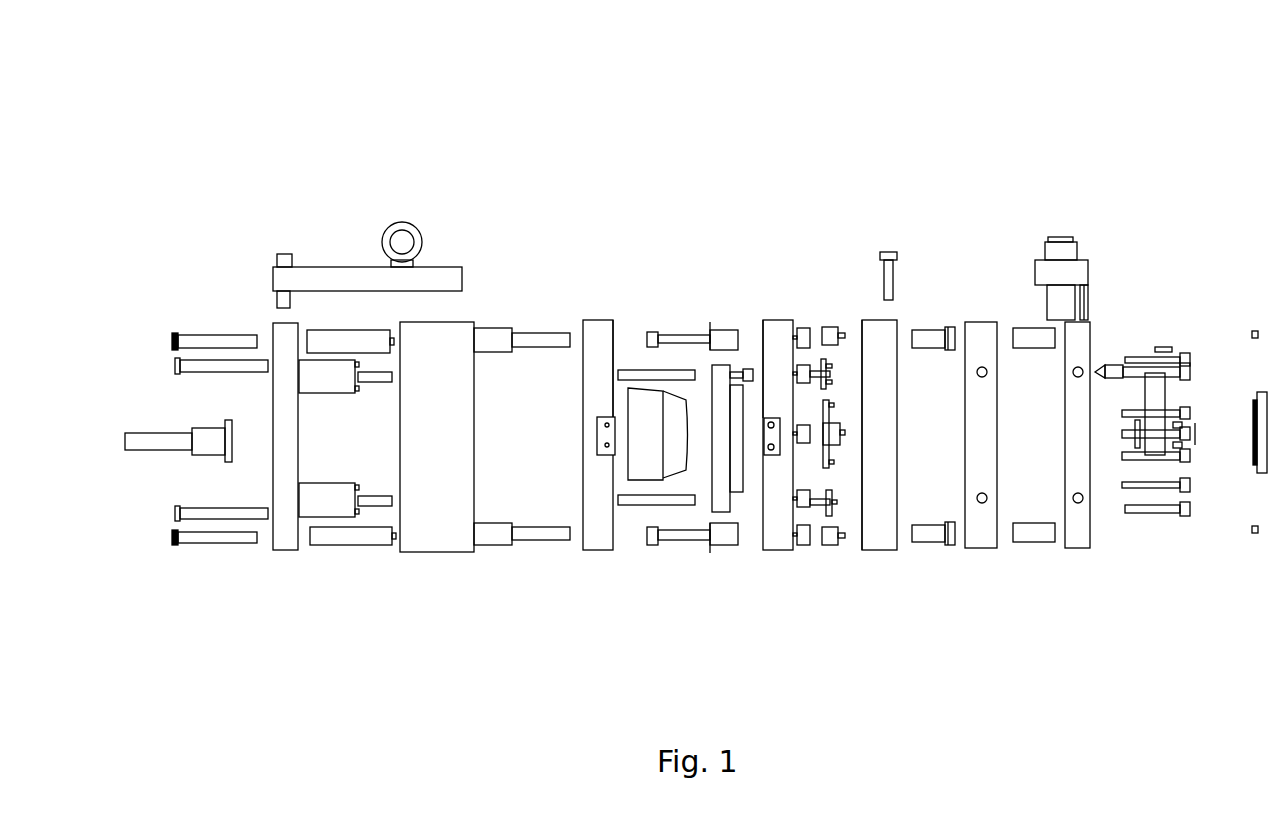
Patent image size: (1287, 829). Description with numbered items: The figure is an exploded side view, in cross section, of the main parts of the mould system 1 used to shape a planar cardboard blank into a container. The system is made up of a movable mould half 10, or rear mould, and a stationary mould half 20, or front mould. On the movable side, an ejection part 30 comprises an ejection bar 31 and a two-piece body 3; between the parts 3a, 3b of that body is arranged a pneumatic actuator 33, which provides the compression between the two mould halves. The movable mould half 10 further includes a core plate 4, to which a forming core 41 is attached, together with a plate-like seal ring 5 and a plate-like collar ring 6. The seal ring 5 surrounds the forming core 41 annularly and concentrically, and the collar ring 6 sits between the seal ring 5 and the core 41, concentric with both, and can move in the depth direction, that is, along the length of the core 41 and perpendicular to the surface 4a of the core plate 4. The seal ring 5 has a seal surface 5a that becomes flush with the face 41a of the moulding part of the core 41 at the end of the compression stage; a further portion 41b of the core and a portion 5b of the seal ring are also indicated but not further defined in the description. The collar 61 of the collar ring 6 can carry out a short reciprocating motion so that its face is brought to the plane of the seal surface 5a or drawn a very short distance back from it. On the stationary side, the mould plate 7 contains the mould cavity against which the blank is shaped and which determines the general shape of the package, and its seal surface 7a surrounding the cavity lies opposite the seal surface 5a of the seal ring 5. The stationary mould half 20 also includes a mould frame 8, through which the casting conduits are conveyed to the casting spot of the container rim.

The mould system 1 is at (738, 90).
The ejection part 30 is at (350, 192).
The movable mould half 10 is at (610, 595).
The stationary mould half 20 is at (980, 218).
The two-piece body 3 is at (290, 535).
The part of the body 3a is at (425, 335).
The part of the body 3b is at (287, 335).
The ejection bar 31 is at (147, 442).
The pneumatic actuator 33 is at (313, 500).
The core plate 4 is at (588, 325).
The surface of the core plate 4a is at (613, 330).
The forming core 41 is at (642, 460).
The face of the moulding part of the core 41a is at (668, 390).
The mold cavity portion 41b is at (687, 410).
The seal ring 5 is at (771, 330).
The seal surface 5a is at (805, 522).
The mold mounting surface of stationary platen 5b is at (762, 360).
The collar ring 6 is at (712, 470).
The collar 61 is at (740, 470).
The mould plate 7 is at (870, 525).
The seal surface of the mould plate 7a is at (862, 352).
The mould frame 8 is at (1072, 525).